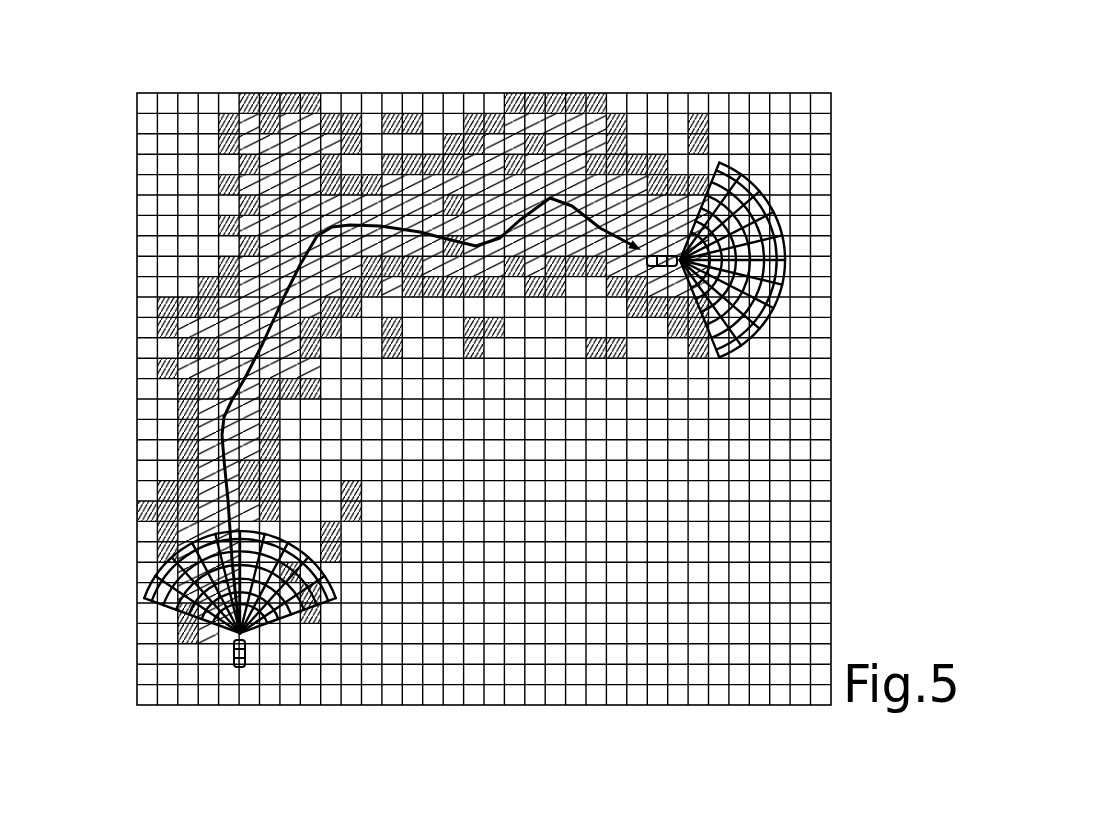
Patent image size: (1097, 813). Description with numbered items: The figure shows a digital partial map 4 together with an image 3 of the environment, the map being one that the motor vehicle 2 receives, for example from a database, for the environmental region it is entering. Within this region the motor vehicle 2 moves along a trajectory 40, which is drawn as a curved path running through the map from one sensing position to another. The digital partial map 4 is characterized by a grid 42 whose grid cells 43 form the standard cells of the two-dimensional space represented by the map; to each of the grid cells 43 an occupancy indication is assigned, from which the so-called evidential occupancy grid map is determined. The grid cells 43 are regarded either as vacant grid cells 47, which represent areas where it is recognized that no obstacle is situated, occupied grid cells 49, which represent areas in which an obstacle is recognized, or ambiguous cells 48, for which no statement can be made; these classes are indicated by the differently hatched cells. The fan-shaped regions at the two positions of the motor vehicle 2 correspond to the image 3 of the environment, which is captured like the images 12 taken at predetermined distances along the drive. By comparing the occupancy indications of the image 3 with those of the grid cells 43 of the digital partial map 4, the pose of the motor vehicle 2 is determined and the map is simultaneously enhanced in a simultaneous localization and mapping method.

The motor vehicle 2 is at (220, 657).
The image of the environment 3 is at (779, 228).
The digital partial map 4 is at (194, 70).
The image of the environment 12 is at (122, 155).
The trajectory 40 is at (219, 410).
The grid 42 is at (808, 135).
The grid cells 43 is at (423, 329).
The vacant grid cells 47 is at (578, 127).
The ambiguous cells 48 is at (538, 108).
The occupied grid cells 49 is at (410, 108).